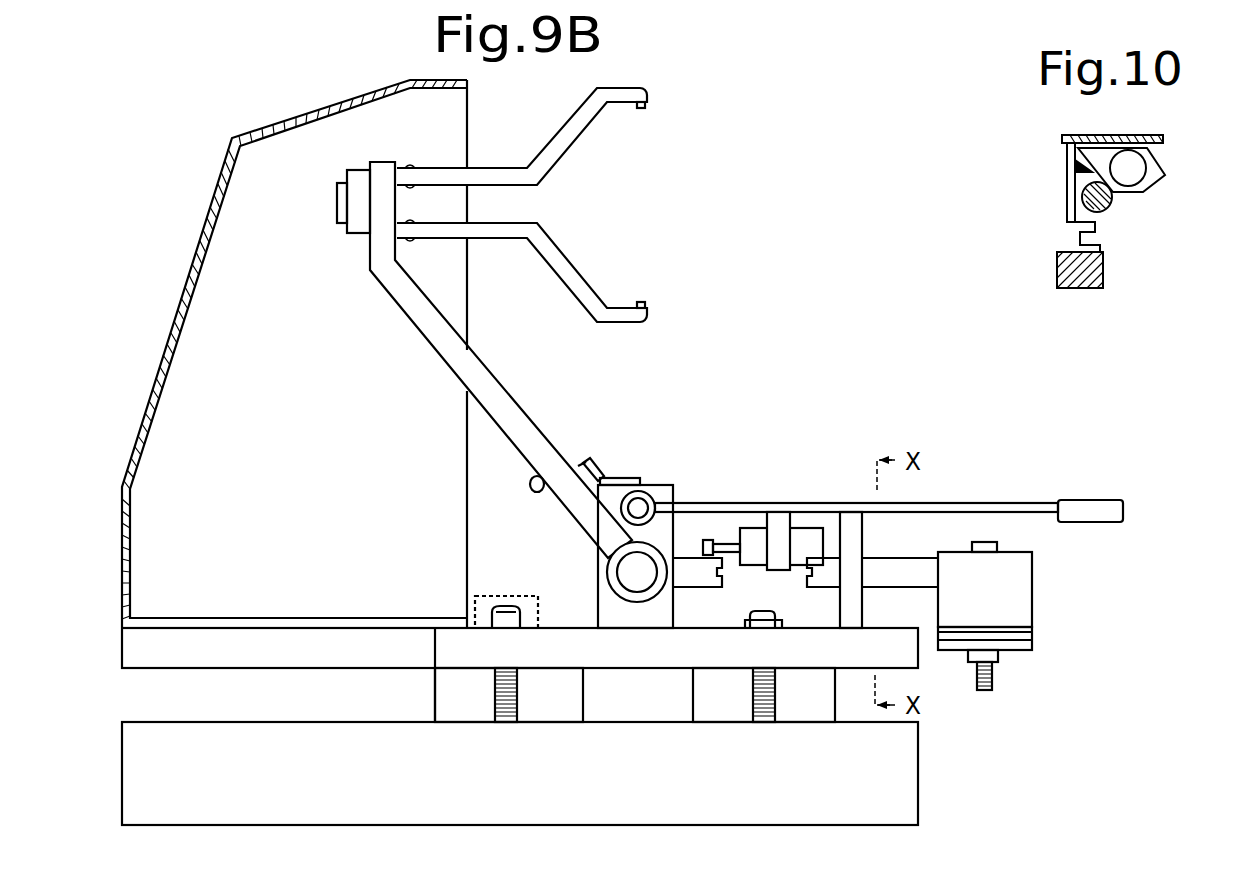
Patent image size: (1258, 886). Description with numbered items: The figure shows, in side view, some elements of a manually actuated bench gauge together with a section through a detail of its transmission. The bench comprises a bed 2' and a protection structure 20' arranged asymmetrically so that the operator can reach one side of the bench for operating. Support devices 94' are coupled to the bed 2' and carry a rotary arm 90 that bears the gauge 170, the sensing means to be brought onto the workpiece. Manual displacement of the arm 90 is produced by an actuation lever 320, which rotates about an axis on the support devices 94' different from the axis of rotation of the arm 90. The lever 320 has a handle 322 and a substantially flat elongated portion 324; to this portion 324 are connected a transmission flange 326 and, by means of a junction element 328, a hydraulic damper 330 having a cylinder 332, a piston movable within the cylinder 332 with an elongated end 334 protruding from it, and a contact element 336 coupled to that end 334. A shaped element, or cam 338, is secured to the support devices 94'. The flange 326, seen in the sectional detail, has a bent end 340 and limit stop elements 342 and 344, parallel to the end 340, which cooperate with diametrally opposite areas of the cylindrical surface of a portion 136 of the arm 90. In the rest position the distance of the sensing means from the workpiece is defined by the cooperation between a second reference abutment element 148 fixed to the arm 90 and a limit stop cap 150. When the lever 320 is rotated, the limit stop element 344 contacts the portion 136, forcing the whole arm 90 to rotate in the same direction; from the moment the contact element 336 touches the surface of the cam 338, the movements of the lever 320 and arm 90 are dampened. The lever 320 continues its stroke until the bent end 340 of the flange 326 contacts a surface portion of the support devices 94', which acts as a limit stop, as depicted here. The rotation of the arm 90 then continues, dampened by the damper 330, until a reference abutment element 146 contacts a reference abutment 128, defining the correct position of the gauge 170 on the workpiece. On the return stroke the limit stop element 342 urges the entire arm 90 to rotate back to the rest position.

In FIG. 9B, the bed 2' is at (499, 726).
In FIG. 9B, the protection structure 20' is at (294, 342).
In FIG. 9B, the rotary arm 90 is at (370, 296).
In FIG. 10, the rotary arm 90 is at (1115, 206).
In FIG. 9B, the support devices 94' is at (595, 556).
In FIG. 10, the support devices 94' is at (1040, 274).
In FIG. 9B, the reference abutment 128 is at (584, 464).
In FIG. 9B, the portion of arm 136 is at (895, 560).
In FIG. 10, the portion of arm 136 is at (1075, 215).
In FIG. 9B, the reference abutment element 146 is at (580, 466).
In FIG. 9B, the second reference abutment element 148 is at (530, 481).
In FIG. 9B, the limit stop cap 150 is at (515, 597).
In FIG. 9B, the gauge 170 is at (660, 150).
In FIG. 9B, the actuation lever 320 is at (1058, 492).
In FIG. 10, the actuation lever 320 is at (1060, 140).
In FIG. 9B, the handle 322 is at (1108, 523).
In FIG. 9B, the flat elongated portion 324 is at (1015, 503).
In FIG. 10, the flat elongated portion 324 is at (1160, 140).
In FIG. 9B, the transmission flange 326 is at (862, 600).
In FIG. 10, the transmission flange 326 is at (1068, 198).
In FIG. 9B, the junction element 328 is at (780, 520).
In FIG. 10, the junction element 328 is at (1160, 185).
In FIG. 9B, the hydraulic damper 330 is at (762, 611).
In FIG. 10, the hydraulic damper 330 is at (1135, 170).
In FIG. 9B, the cylinder 332 is at (800, 535).
In FIG. 9B, the elongated end 334 is at (722, 546).
In FIG. 9B, the contact element 336 is at (706, 540).
In FIG. 9B, the cam 338 is at (688, 500).
In FIG. 10, the bent end 340 is at (1102, 250).
In FIG. 10, the limit stop element 342 is at (1098, 228).
In FIG. 10, the limit stop element 344 is at (1076, 168).